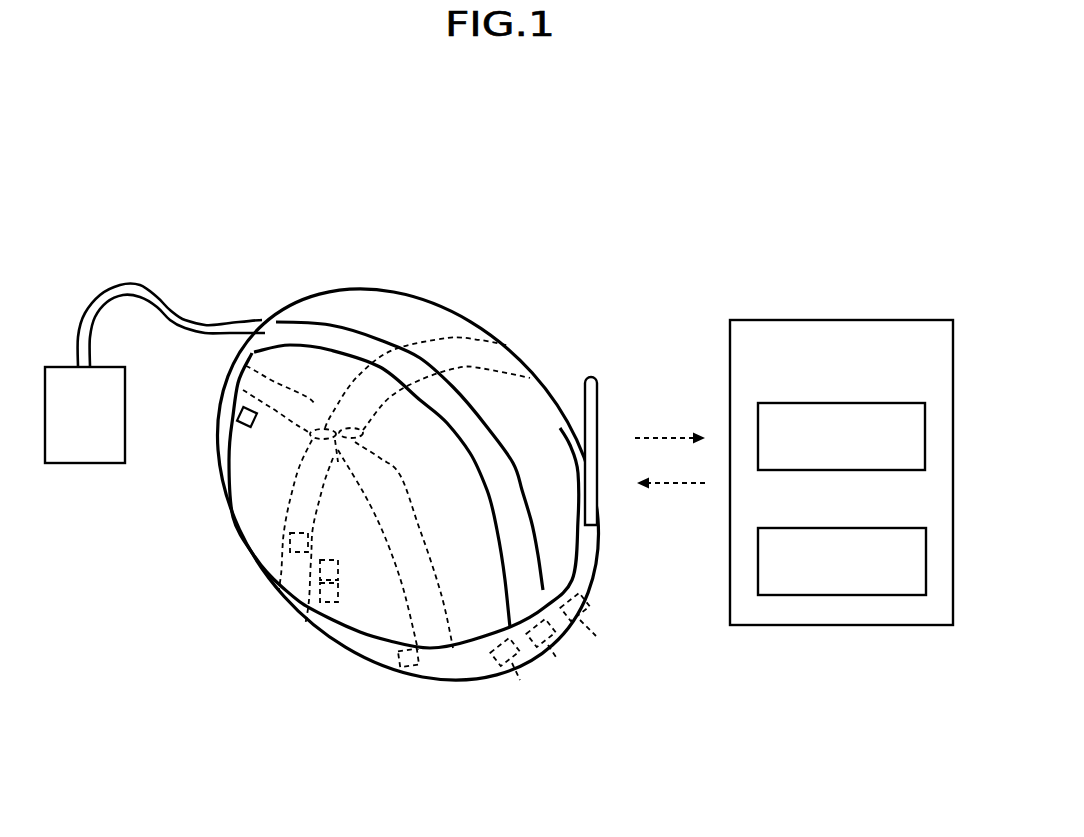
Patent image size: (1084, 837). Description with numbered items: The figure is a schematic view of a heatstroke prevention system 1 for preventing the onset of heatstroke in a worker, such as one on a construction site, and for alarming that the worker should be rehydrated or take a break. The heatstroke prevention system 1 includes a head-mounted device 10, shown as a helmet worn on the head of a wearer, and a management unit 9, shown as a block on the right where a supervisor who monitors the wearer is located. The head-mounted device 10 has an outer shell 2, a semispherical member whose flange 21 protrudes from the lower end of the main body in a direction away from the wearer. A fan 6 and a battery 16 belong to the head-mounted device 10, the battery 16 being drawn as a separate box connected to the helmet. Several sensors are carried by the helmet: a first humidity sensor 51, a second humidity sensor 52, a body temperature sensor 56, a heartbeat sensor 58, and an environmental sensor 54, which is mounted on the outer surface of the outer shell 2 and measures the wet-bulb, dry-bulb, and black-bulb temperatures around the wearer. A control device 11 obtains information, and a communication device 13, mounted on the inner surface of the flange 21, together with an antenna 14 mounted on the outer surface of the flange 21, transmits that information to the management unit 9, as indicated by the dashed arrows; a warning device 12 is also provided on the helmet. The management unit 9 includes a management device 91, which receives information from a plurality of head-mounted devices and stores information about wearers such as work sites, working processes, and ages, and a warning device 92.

The heatstroke prevention system 1 is at (710, 129).
The outer shell 2 is at (364, 298).
The fan 6 is at (320, 425).
The management unit 9 is at (880, 320).
The head-mounted device 10 is at (432, 211).
The control device 11 is at (513, 665).
The warning device 12 is at (549, 645).
The communication device 13 is at (582, 620).
The antenna 14 is at (599, 417).
The battery 16 is at (88, 435).
The flange 21 is at (452, 668).
The first humidity sensor 51 is at (417, 660).
The second humidity sensor 52 is at (298, 552).
The environmental sensor 54 is at (249, 404).
The body temperature sensor 56 is at (338, 570).
The heartbeat sensor 58 is at (328, 602).
The management device 91 is at (857, 403).
The warning device 92 is at (855, 528).